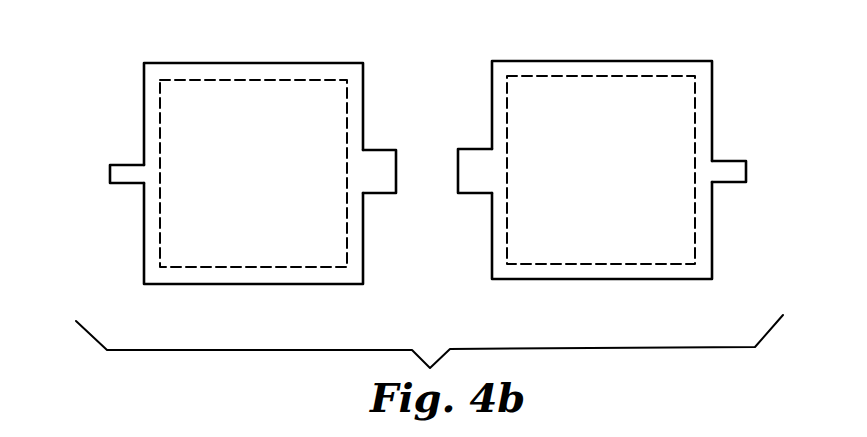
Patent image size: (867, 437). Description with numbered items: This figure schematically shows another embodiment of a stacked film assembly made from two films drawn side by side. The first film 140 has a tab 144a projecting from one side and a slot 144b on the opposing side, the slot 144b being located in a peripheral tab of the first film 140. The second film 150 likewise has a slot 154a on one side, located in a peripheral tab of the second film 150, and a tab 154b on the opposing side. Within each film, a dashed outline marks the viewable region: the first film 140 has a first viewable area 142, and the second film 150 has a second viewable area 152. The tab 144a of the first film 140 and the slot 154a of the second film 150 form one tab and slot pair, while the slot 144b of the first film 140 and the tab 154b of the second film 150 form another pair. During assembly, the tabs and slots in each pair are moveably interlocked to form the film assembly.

The first film 140 is at (253, 171).
The first viewable area 142 is at (268, 273).
The tab 144a is at (130, 164).
The slot 144b is at (378, 160).
The second film 150 is at (598, 167).
The second viewable area 152 is at (618, 265).
The slot 154a is at (474, 182).
The tab 154b is at (728, 183).